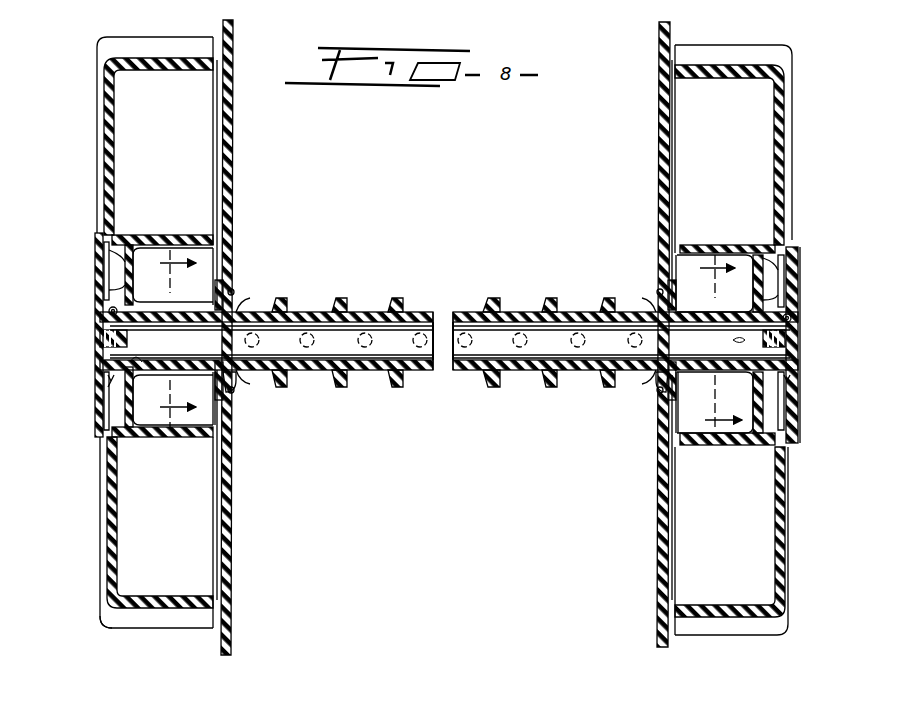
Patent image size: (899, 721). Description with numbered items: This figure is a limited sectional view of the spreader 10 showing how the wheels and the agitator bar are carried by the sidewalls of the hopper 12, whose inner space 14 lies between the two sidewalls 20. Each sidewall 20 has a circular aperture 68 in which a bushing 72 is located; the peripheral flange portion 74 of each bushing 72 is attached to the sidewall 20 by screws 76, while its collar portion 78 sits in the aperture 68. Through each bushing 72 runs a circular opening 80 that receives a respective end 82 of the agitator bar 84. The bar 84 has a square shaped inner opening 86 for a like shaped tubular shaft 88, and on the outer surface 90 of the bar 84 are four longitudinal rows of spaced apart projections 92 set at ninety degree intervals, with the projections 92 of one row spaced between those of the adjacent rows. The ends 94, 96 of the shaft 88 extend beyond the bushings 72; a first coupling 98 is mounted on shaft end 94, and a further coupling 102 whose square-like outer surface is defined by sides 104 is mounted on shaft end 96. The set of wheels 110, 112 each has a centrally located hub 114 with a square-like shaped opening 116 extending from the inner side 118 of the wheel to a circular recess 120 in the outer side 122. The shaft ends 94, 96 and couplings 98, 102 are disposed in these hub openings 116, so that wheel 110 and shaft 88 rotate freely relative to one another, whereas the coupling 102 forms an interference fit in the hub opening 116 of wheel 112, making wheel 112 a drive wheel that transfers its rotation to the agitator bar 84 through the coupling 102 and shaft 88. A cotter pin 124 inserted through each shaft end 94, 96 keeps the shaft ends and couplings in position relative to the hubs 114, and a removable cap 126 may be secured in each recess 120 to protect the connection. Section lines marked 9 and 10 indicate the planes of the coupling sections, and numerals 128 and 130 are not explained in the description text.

The section line 9 is at (166, 339).
The spreader 10 is at (712, 341).
The hopper 12 is at (232, 647).
The inner space 14 is at (441, 211).
The sidewall 20 is at (232, 150).
The circular aperture 68 is at (233, 305).
The bushing 72 is at (237, 378).
The peripheral flange portion 74 is at (213, 402).
The screw 76 is at (233, 292).
The collar portion 78 is at (243, 312).
The circular opening 80 is at (268, 373).
The end of agitator bar 82 is at (233, 322).
The agitator bar 84 is at (360, 312).
The square shaped inner opening 86 is at (510, 318).
The tubular shaft 88 is at (477, 353).
The outer surface 90 is at (408, 312).
The projection 92 is at (337, 385).
The shaft end 94 is at (126, 390).
The shaft end 96 is at (782, 317).
The first coupling 98 is at (175, 405).
The further coupling 102 is at (722, 308).
The side 104 is at (703, 310).
The wheel 110 is at (108, 620).
The wheel 112 is at (773, 68).
The hub 114 is at (137, 438).
The square-like shaped opening 116 is at (145, 238).
The inner side 118 is at (213, 106).
The circular recess 120 is at (100, 262).
The outer side 122 is at (100, 199).
The cotter pin 124 is at (110, 310).
The removable cap 126 is at (97, 380).
The channel member 128 is at (167, 630).
The channel member 130 is at (128, 44).